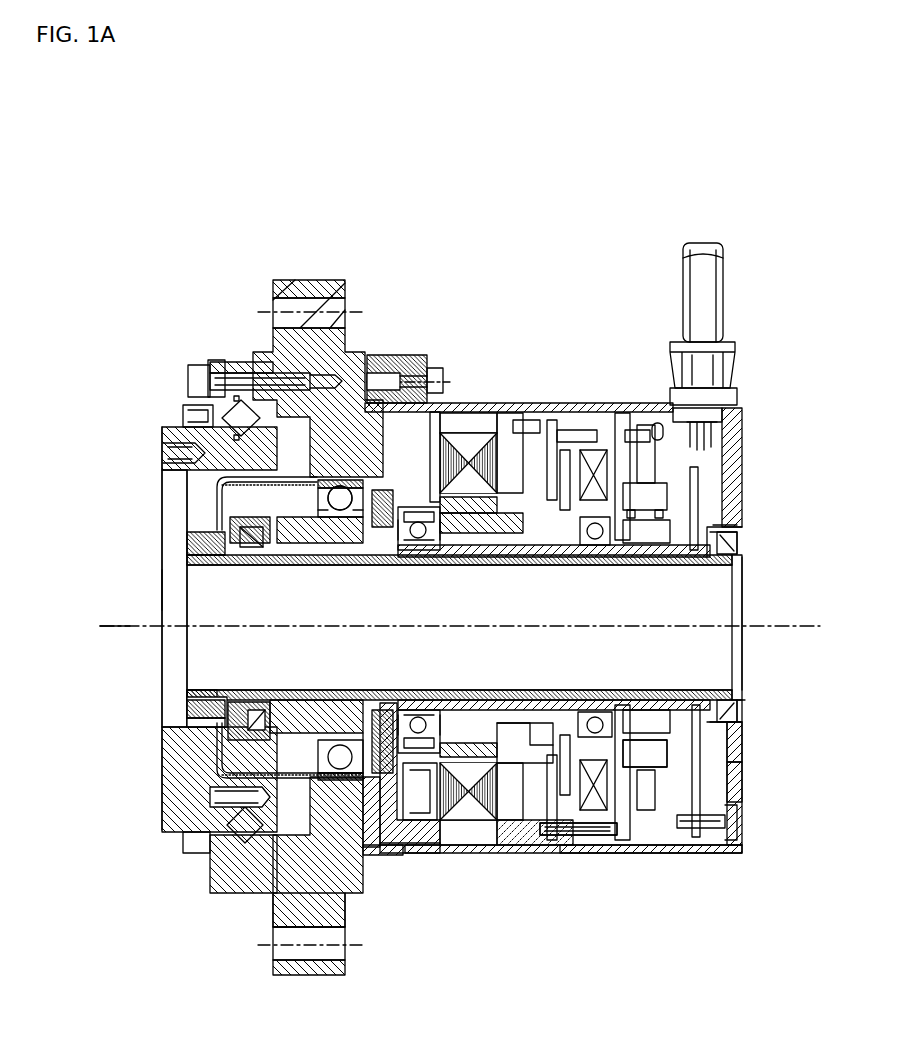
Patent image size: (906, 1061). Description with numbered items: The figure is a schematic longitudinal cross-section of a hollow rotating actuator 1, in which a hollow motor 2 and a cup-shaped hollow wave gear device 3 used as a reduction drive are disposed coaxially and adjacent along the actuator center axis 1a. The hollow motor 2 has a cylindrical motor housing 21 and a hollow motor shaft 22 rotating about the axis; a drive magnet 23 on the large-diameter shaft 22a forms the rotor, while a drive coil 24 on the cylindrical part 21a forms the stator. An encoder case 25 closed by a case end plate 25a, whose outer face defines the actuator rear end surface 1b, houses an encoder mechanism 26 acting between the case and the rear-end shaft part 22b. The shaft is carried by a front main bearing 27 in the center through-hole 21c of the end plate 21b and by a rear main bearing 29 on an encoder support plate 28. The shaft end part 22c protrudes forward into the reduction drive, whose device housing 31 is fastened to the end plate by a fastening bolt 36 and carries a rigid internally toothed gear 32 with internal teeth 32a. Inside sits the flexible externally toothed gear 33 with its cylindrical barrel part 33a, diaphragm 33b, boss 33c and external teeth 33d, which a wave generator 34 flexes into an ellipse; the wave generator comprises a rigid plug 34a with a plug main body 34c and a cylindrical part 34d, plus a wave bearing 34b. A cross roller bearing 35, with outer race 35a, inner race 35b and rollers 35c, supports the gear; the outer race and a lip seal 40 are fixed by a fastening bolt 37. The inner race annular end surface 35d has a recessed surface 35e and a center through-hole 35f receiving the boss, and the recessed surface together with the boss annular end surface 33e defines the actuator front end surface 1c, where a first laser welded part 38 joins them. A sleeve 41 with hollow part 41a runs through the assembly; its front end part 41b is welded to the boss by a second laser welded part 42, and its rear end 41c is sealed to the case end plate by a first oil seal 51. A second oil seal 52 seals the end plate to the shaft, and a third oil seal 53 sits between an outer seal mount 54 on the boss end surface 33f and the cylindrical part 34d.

The hollow rotating actuator 1 is at (623, 254).
The actuator center axis 1a is at (110, 626).
The actuator rear end surface 1b is at (745, 728).
The actuator front end surface 1c is at (160, 592).
The hollow motor 2 is at (567, 376).
The hollow wave gear device 3 is at (424, 338).
The motor housing 21 is at (470, 860).
The cylindrical part 21a is at (450, 855).
The end plate 21b is at (383, 820).
The center through-hole 21c is at (380, 832).
The hollow motor shaft 22 is at (513, 738).
The large-diameter shaft 22a is at (488, 713).
The rear-end shaft part 22b is at (593, 710).
The shaft end part 22c is at (388, 705).
The drive magnet 23 is at (515, 795).
The drive coil 24 is at (485, 840).
The encoder case 25 is at (660, 860).
The case end plate 25a is at (745, 765).
The encoder mechanism 26 is at (700, 845).
The front main bearing 27 is at (427, 715).
The encoder support plate 28 is at (602, 838).
The rear main bearing 29 is at (598, 720).
The device housing 31 is at (344, 337).
The rigid internally toothed gear 32 is at (368, 362).
The internal teeth 32a is at (358, 777).
The flexible externally toothed gear 33 is at (292, 466).
The cylindrical barrel part 33a is at (282, 777).
The diaphragm 33b is at (193, 760).
The boss 33c is at (187, 714).
The external teeth 33d is at (333, 780).
The annular end surface 33e is at (185, 707).
The end surface 33f is at (228, 707).
The wave generator 34 is at (312, 505).
The rigid plug 34a is at (377, 600).
The wave bearing 34b is at (343, 510).
The plug main body 34c is at (335, 520).
The cylindrical part 34d is at (270, 550).
The cross roller bearing 35 is at (193, 407).
The outer race 35a is at (232, 385).
The inner race 35b is at (200, 435).
The rollers 35c is at (193, 420).
The annular end surface 35d is at (163, 807).
The recessed surface 35e is at (187, 743).
The center through-hole 35f is at (185, 721).
The fastening bolt 36 is at (443, 375).
The fastening bolt 37 is at (200, 368).
The first laser welded part 38 is at (185, 540).
The lip seal 40 is at (197, 868).
The sleeve 41 is at (668, 568).
The hollow part 41a is at (600, 606).
The front end part 41b is at (187, 695).
The rear end 41c is at (735, 695).
The second laser welded part 42 is at (185, 564).
The first oil seal 51 is at (745, 540).
The second oil seal 52 is at (386, 533).
The third oil seal 53 is at (247, 548).
The outer seal mount 54 is at (236, 727).